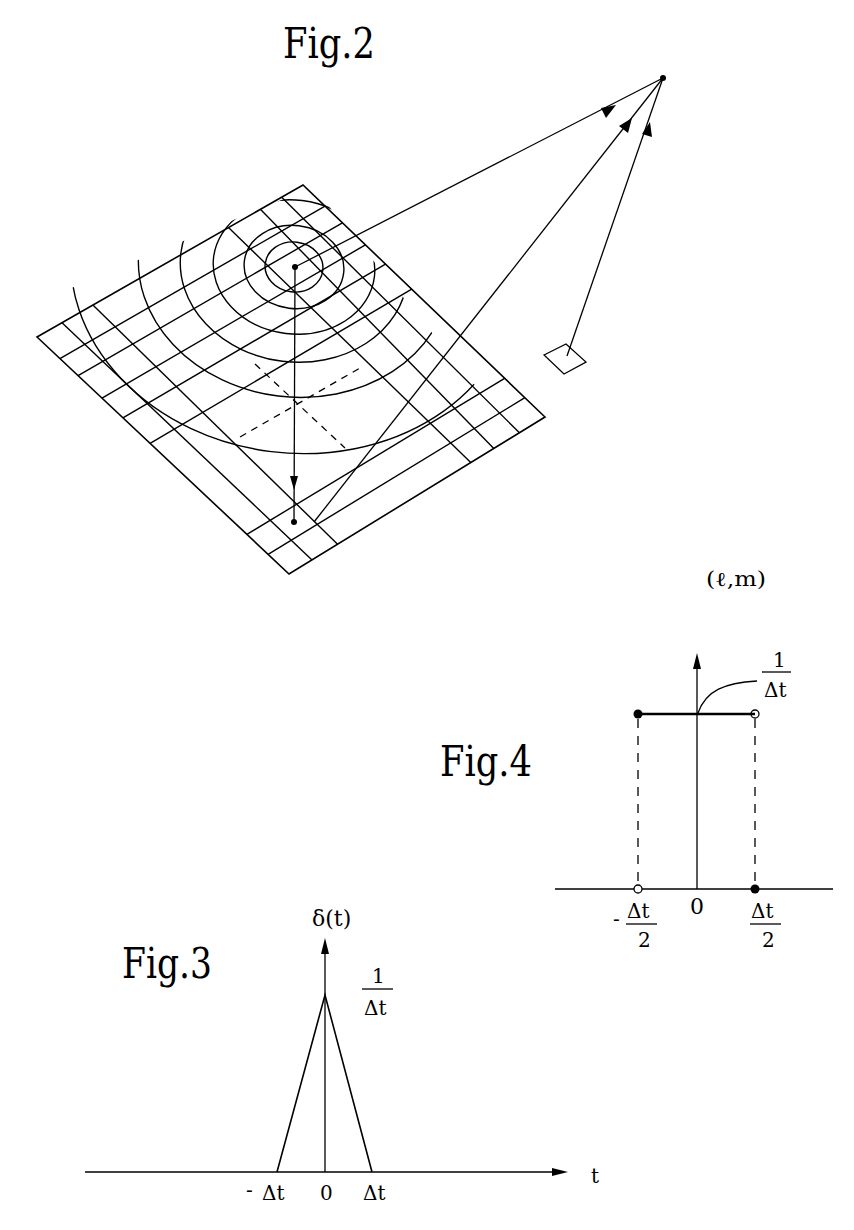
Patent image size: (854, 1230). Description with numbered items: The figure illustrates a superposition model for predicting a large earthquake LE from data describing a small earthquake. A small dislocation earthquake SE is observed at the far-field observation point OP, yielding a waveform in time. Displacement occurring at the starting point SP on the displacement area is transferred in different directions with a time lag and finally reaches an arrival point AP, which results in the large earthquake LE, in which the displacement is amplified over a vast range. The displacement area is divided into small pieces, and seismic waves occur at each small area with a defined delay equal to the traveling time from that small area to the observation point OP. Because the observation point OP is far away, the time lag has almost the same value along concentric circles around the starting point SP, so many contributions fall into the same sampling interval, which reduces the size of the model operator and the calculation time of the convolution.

The large earthquake LE is at (137, 447).
The starting point SP is at (300, 250).
The observation point OP is at (490, 287).
The small dislocation earthquake SE is at (572, 372).
The arrival point AP is at (296, 530).